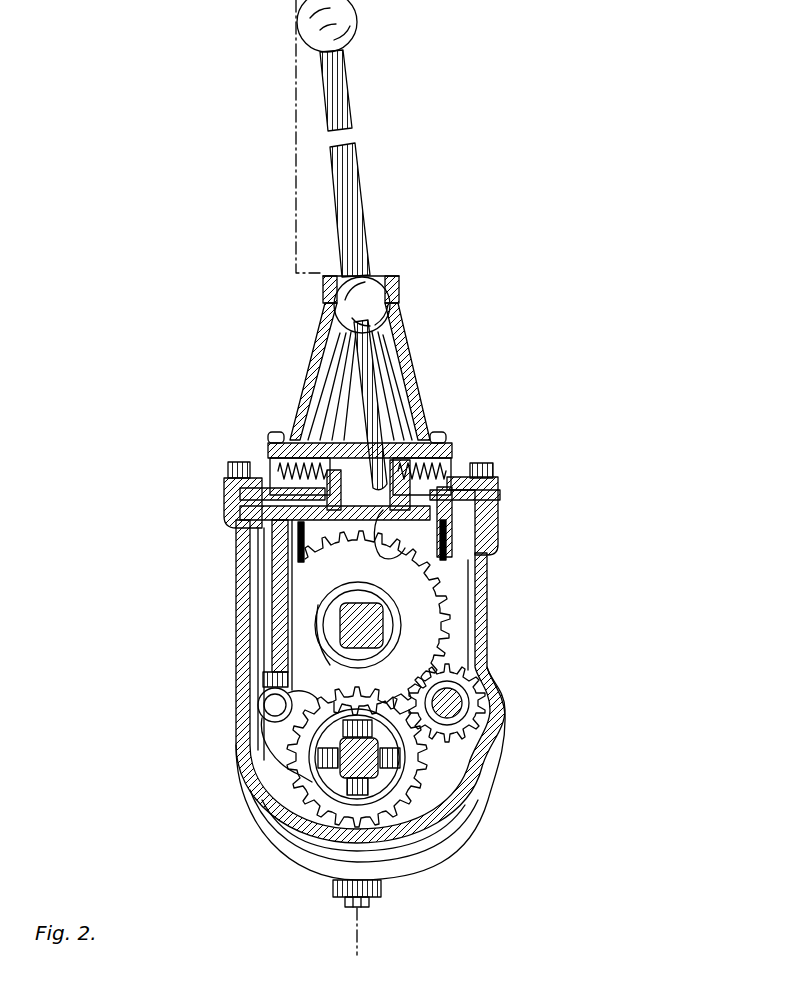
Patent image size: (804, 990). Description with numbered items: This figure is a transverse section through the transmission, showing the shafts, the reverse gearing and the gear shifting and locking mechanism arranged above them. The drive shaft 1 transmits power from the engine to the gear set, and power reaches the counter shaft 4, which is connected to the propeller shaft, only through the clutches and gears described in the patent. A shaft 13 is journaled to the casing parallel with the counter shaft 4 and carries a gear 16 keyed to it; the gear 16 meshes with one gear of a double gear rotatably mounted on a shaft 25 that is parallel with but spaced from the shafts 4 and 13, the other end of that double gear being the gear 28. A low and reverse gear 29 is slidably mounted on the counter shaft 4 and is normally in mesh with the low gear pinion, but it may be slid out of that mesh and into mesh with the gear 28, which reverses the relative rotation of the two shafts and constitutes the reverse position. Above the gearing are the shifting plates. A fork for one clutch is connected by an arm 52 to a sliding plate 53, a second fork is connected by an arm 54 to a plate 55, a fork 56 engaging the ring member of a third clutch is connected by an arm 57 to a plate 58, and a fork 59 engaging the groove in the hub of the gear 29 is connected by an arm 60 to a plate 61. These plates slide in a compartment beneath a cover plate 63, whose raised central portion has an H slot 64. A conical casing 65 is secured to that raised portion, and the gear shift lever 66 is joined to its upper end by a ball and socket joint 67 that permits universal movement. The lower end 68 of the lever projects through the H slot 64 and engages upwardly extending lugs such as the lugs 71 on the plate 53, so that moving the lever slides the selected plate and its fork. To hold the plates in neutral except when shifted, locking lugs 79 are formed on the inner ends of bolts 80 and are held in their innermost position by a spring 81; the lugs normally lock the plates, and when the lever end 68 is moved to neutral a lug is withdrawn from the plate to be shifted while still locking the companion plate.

The drive shaft 1 is at (288, 15).
The counter shaft 4 is at (340, 628).
The shaft 13 is at (355, 760).
The gear 16 is at (325, 805).
The shaft 25 is at (452, 706).
The gear 28 is at (457, 680).
The low and reverse gear 29 is at (452, 610).
The arm 52 is at (458, 560).
The sliding plate 53 is at (494, 468).
The arm 54 is at (452, 546).
The plate 55 is at (442, 498).
The fork 56 is at (300, 735).
The arm 57 is at (282, 582).
The plate 58 is at (265, 501).
The fork 59 is at (298, 602).
The arm 60 is at (292, 548).
The plate 61 is at (275, 510).
The cover plate 63 is at (458, 485).
The H slot 64 is at (326, 455).
The conical casing 65 is at (410, 372).
The gear shift lever 66 is at (360, 248).
The ball and socket joint 67 is at (368, 312).
The lower end of gear shift lever 68 is at (380, 438).
The lugs 71 is at (368, 484).
The locking lugs 79 is at (392, 512).
The bolts 80 is at (258, 486).
The spring 81 is at (272, 462).